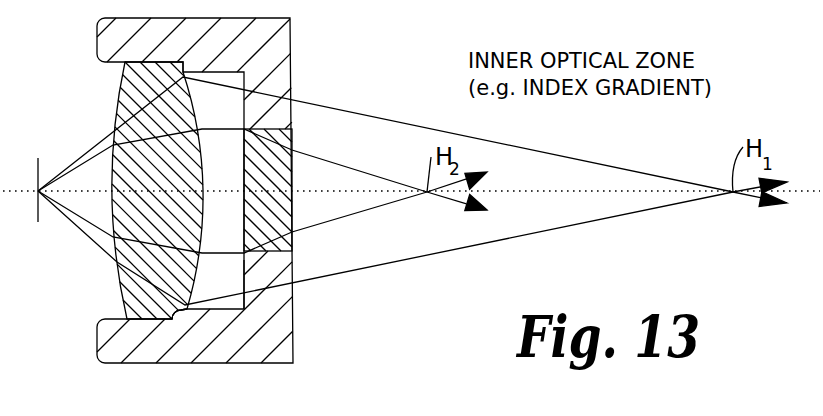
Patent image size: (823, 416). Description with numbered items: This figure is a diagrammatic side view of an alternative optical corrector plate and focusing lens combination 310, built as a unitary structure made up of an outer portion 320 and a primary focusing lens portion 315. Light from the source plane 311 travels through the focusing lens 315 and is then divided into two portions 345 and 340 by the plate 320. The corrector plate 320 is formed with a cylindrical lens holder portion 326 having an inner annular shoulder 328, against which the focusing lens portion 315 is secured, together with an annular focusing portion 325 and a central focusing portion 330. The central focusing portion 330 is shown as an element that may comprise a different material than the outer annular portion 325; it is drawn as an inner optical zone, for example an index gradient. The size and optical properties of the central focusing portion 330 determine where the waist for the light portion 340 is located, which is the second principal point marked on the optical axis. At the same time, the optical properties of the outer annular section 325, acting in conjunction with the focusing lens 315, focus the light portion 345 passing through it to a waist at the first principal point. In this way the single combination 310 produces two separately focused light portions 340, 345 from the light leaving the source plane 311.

The optical corrector plate and focusing lens combination 310 is at (323, 46).
The source plane 311 is at (38, 222).
The primary focusing lens portion 315 is at (118, 93).
The outer portion 320 is at (304, 345).
The annular focusing portion 325 is at (283, 308).
The cylindrical lens holder portion 326 is at (112, 331).
The inner annular shoulder 328 is at (172, 320).
The central focusing portion 330 is at (280, 162).
The light portion 340 is at (330, 225).
The light portion 345 is at (540, 233).